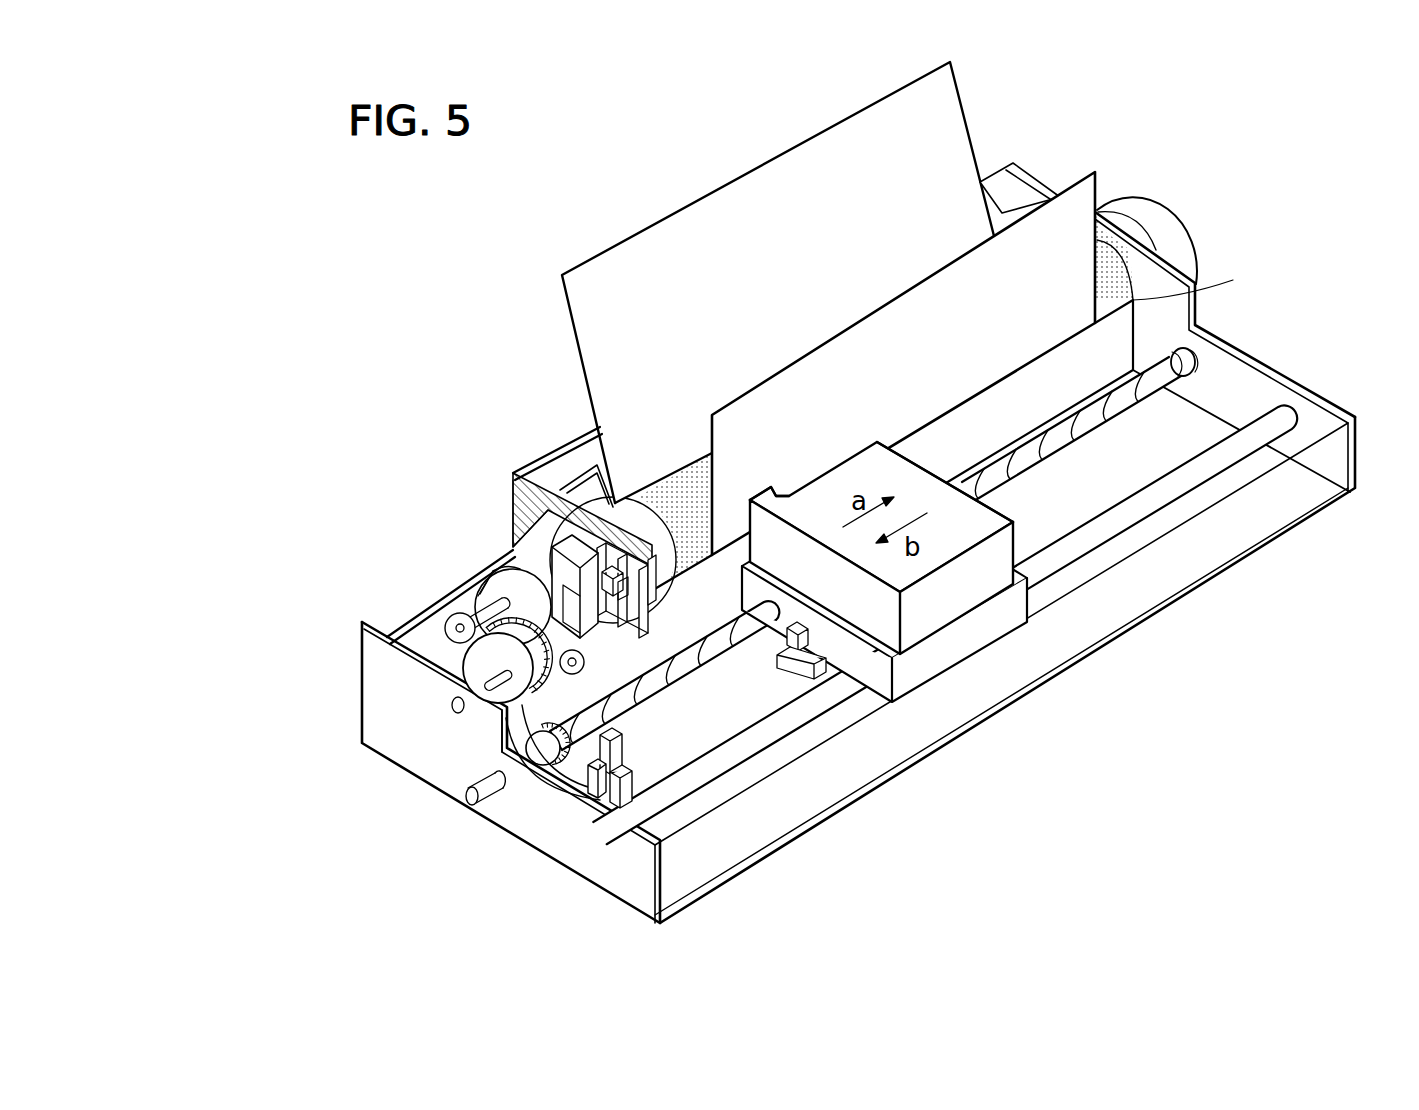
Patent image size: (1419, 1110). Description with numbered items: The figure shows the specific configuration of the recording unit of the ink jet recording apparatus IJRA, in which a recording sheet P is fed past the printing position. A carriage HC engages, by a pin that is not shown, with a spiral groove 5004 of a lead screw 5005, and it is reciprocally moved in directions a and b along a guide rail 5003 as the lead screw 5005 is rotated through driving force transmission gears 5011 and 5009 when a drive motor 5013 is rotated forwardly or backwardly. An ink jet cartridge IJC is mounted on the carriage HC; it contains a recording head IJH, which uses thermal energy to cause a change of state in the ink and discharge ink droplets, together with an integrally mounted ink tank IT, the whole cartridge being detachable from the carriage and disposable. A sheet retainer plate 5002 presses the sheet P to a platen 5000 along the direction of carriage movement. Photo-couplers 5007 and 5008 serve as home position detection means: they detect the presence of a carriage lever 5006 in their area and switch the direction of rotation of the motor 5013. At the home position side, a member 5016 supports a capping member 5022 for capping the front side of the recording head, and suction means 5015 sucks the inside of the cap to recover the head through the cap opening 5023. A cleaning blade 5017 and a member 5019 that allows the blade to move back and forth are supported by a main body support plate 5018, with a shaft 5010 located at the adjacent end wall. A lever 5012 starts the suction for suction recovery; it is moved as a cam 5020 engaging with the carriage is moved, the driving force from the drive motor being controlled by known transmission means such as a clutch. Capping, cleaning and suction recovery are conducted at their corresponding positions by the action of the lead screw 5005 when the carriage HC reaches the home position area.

The recording paper P is at (957, 100).
The ink jet recording apparatus IJRA is at (1043, 167).
The platen 5000 is at (1268, 258).
The sheet retainer plate 5002 is at (1003, 395).
The guide rail 5003 is at (832, 693).
The spiral groove 5004 is at (733, 633).
The lead screw 5005 is at (698, 700).
The carriage lever 5006 is at (802, 660).
The photo-coupler 5007 is at (623, 756).
The photo-coupler 5008 is at (603, 790).
The driving force transmission gear 5009 is at (540, 753).
The shaft 5010 is at (507, 708).
The driving force transmission gear 5011 is at (478, 660).
The lever 5012 is at (480, 572).
The drive motor 5013 is at (520, 558).
The suction means 5015 is at (562, 540).
The member for supporting capping member 5016 is at (612, 545).
The cleaning blade 5017 is at (650, 560).
The main body support plate 5018 is at (530, 467).
The member for allowing blade to move back and forth 5019 is at (523, 503).
The cam 5020 is at (597, 803).
The capping member 5022 is at (713, 515).
The cap opening 5023 is at (620, 600).
The ink jet head IJH is at (782, 480).
The ink tank IT is at (934, 477).
The ink jet cartridge IJC is at (1002, 503).
The carriage HC is at (1020, 604).